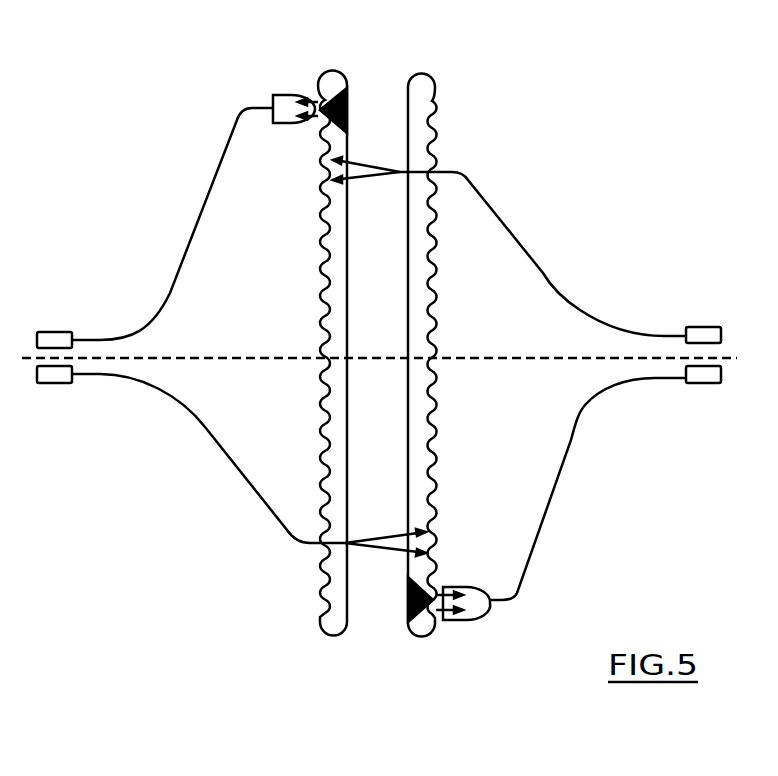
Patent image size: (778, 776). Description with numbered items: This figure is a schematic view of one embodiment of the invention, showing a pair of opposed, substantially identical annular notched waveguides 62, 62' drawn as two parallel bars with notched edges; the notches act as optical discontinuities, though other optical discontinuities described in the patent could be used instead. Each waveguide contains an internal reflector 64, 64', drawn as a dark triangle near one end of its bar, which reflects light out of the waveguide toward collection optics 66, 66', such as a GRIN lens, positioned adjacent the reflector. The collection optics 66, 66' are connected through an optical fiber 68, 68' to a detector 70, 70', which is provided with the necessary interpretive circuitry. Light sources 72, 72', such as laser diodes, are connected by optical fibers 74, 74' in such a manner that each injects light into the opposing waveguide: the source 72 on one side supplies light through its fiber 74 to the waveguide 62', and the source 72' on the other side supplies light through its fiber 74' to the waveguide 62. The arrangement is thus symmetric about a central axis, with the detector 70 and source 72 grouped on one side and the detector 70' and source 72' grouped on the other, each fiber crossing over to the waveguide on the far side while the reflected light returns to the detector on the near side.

The annular notched waveguide 62 is at (325, 382).
The annular notched waveguide 62' is at (419, 383).
The internal reflector 64 is at (359, 78).
The internal reflector 64' is at (388, 653).
The collection optics 66 is at (286, 138).
The collection optics 66' is at (477, 623).
The optical fiber 68 is at (172, 224).
The optical fiber 68' is at (588, 489).
The detector 70 is at (59, 312).
The detector 70' is at (698, 406).
The light source 72 is at (58, 401).
The light source 72' is at (714, 309).
The optical fiber 74 is at (249, 465).
The optical fiber 74' is at (509, 246).